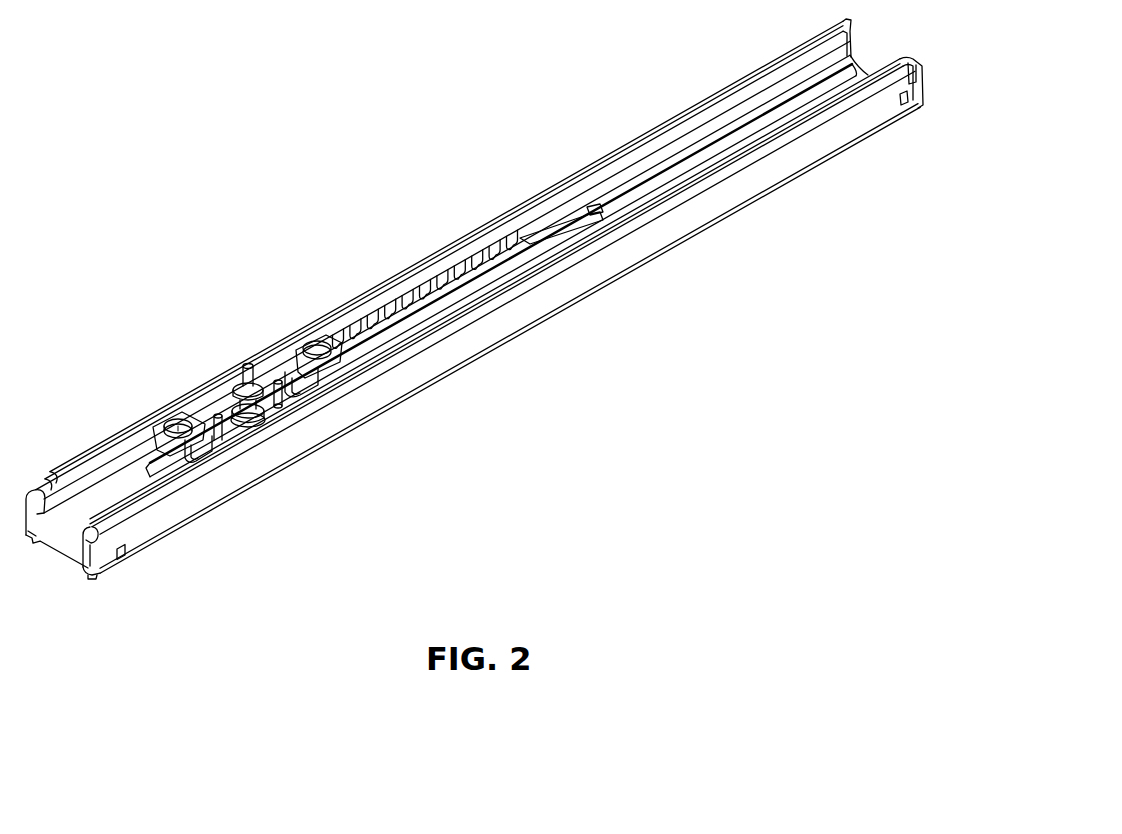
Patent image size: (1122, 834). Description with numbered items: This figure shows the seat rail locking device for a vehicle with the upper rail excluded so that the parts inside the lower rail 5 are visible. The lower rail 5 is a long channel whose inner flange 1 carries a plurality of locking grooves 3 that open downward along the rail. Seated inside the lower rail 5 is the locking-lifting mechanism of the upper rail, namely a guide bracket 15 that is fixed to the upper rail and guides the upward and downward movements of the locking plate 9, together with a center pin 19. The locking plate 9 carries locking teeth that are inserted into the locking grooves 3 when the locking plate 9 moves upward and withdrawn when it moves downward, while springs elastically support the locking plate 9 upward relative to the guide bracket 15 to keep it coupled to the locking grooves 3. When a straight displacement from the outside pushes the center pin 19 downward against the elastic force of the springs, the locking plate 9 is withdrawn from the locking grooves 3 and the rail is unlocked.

The inner flange 1 is at (528, 235).
The locking grooves 3 is at (470, 268).
The lower rail 5 is at (607, 272).
The locking plate 9 is at (275, 410).
The guide bracket 15 is at (160, 433).
The center pin 19 is at (248, 362).